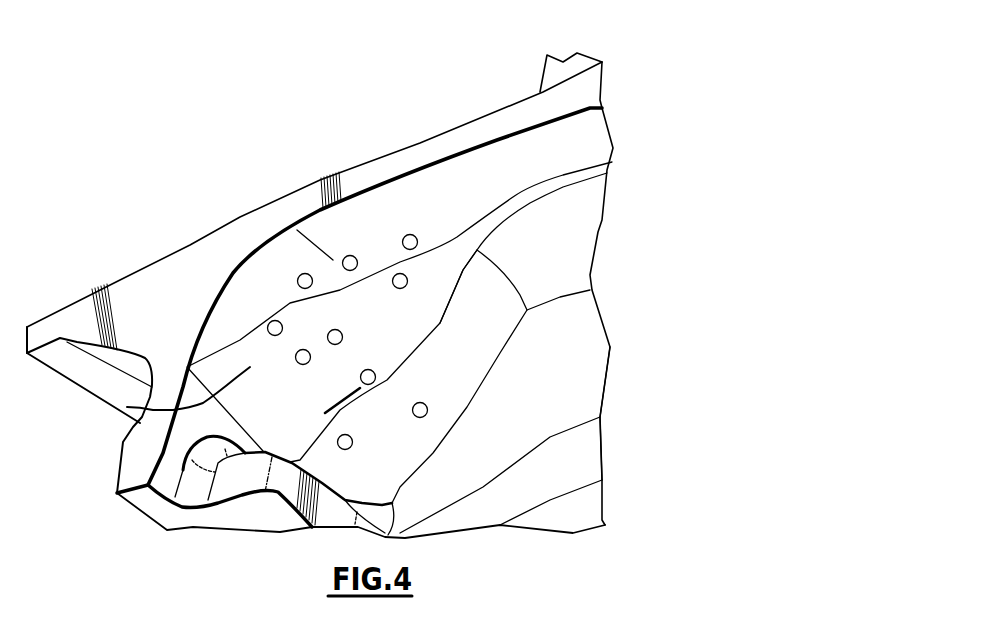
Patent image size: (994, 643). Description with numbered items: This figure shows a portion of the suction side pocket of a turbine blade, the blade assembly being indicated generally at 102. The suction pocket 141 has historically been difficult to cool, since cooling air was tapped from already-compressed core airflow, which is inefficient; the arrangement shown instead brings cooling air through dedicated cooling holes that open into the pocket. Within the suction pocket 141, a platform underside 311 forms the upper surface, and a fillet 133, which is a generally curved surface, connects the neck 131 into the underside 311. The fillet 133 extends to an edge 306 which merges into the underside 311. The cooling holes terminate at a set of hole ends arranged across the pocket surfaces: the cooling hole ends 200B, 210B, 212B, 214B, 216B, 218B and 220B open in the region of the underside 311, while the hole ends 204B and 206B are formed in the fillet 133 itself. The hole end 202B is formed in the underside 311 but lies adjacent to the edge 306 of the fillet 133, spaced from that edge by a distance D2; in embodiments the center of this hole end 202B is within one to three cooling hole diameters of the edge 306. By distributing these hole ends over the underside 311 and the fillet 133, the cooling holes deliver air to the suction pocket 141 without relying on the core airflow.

The vehicle body structure 102 is at (627, 83).
The neck 131 is at (547, 395).
The fillet 133 is at (557, 237).
The suction pocket 141 is at (127, 407).
The edge 306 is at (452, 287).
The platform underside 311 is at (288, 242).
The cooling hole end 200B is at (403, 241).
The hole end 202B is at (375, 378).
The cooling hole end 204B is at (428, 413).
The cooling hole end 206B is at (345, 450).
The aperture 210B is at (343, 258).
The aperture 212B is at (297, 281).
The cooling hole end 214B is at (267, 326).
The cooling hole end 216B is at (407, 283).
The aperture 218B is at (335, 329).
The cooling hole end 220B is at (303, 365).
The distance D2 is at (330, 380).